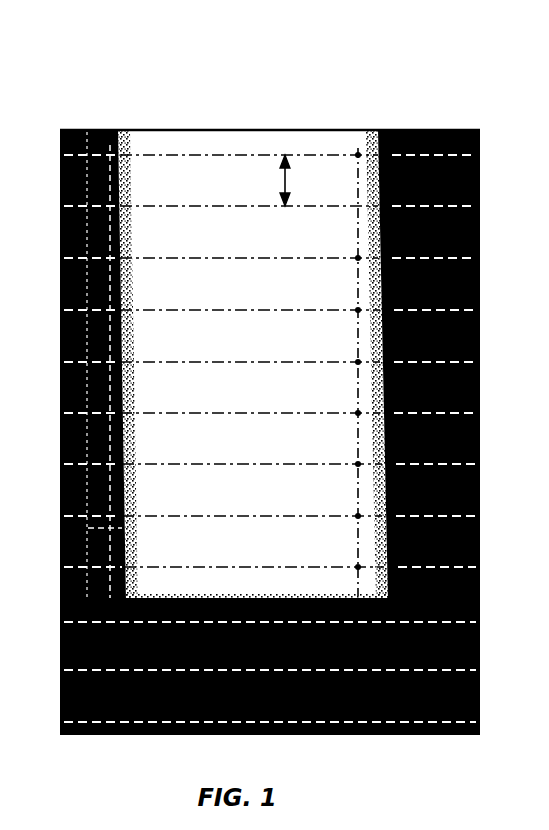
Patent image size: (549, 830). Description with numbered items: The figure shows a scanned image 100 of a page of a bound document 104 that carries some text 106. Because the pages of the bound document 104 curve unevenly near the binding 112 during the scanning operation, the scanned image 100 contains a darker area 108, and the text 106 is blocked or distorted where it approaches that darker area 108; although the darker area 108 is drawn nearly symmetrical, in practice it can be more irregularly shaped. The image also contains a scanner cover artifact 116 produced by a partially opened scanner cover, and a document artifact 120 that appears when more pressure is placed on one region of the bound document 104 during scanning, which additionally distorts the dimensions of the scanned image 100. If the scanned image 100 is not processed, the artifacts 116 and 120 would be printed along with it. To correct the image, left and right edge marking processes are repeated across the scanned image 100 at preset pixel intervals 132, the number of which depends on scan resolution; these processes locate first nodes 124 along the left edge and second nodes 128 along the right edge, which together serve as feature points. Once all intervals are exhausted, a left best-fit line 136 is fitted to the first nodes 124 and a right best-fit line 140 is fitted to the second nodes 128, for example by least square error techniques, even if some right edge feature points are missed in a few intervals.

The scanned image 100 is at (262, 82).
The bound document 104 is at (219, 497).
The text 106 is at (178, 373).
The darker area 108 is at (90, 528).
The binding 112 is at (62, 193).
The scanner cover artifact 116 is at (92, 736).
The document artifact 120 is at (134, 133).
The first nodes 124 is at (87, 130).
The second nodes 128 is at (358, 153).
The preset pixel intervals 132 is at (286, 178).
The left best-fit line 136 is at (112, 242).
The right best-fit line 140 is at (357, 528).